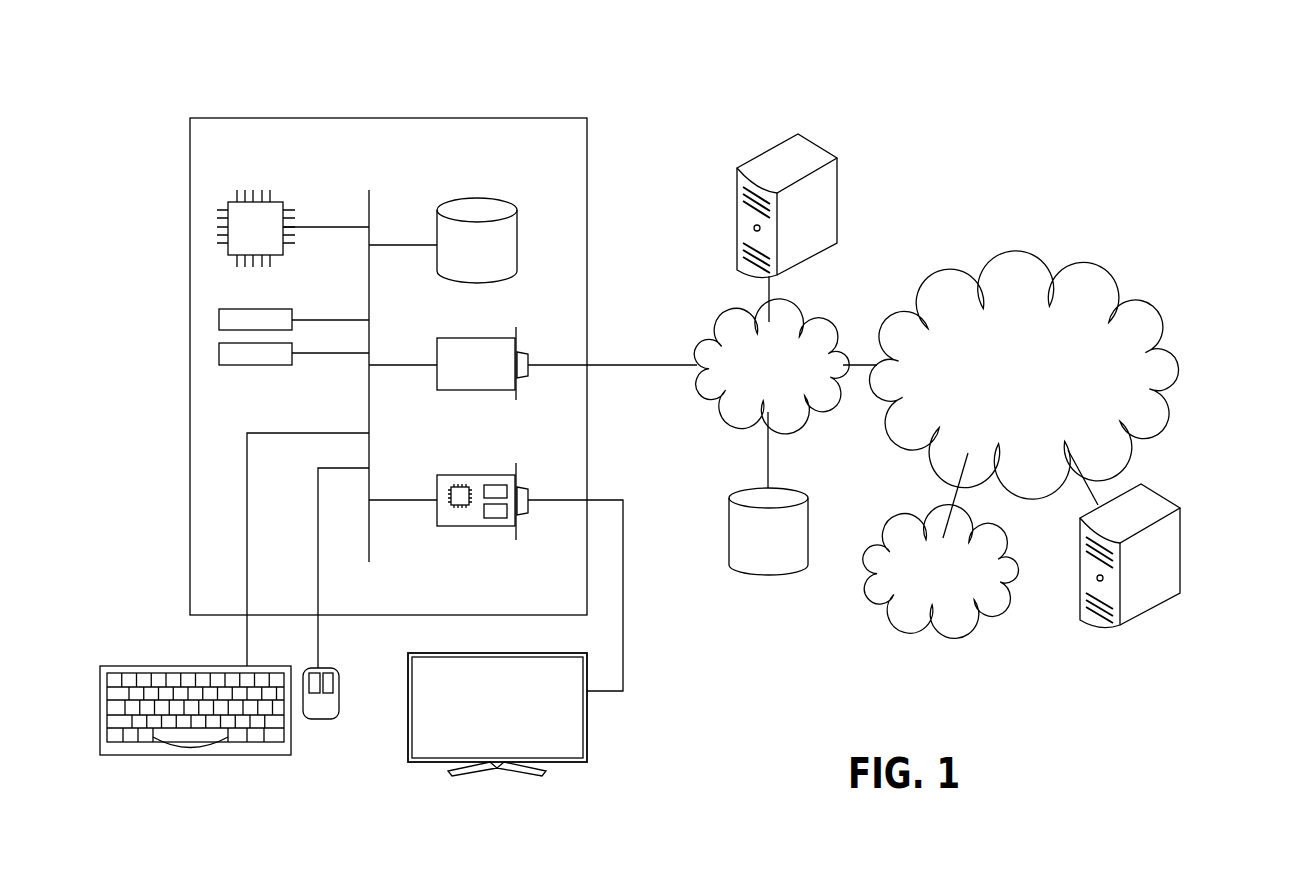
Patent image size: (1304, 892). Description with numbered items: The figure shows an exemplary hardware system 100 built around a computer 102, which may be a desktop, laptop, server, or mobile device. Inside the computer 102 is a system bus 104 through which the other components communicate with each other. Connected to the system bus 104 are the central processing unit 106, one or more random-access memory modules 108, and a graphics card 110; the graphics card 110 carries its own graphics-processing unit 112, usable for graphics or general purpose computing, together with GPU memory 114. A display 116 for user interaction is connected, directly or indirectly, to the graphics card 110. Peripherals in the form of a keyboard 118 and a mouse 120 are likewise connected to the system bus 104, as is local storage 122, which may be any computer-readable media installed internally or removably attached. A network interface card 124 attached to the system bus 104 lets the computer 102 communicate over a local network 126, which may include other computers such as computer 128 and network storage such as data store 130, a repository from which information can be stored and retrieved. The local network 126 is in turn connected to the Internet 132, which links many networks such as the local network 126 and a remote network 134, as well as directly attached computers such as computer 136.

The system 100 is at (1105, 125).
The computer 102 is at (545, 118).
The system bus 104 is at (370, 200).
The central processing unit 106 is at (278, 200).
The random-access memory modules 108 is at (293, 348).
The graphics card 110 is at (474, 501).
The graphics-processing unit 112 is at (458, 507).
The GPU memory 114 is at (493, 517).
The display 116 is at (588, 742).
The keyboard 118 is at (198, 755).
The mouse 120 is at (318, 720).
The local storage 122 is at (518, 228).
The network interface card 124 is at (435, 350).
The local network 126 is at (820, 325).
The computer 128 is at (823, 147).
The data store 130 is at (798, 490).
The Internet 132 is at (1067, 290).
The remote network 134 is at (993, 530).
The computer 136 is at (1160, 488).